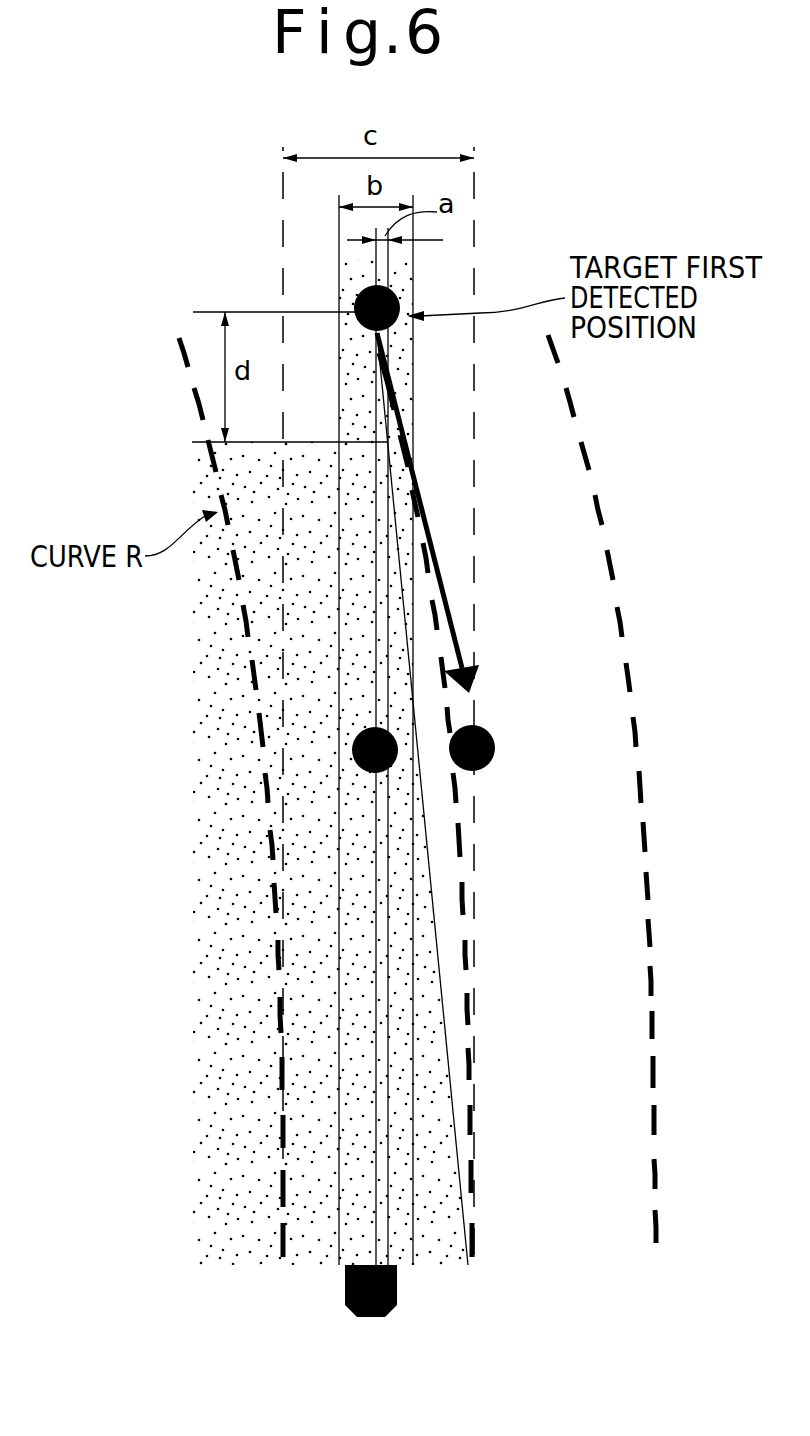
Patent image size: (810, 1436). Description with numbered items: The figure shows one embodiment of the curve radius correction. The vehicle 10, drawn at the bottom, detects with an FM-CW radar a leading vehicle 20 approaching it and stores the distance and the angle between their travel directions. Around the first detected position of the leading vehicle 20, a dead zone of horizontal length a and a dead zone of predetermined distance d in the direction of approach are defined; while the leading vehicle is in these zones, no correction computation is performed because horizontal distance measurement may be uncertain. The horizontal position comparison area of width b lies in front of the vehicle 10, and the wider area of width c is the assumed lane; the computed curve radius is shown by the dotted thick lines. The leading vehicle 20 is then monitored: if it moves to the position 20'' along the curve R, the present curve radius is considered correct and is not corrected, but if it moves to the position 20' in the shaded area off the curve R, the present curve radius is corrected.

The leading vehicle 20 is at (451, 276).
The position 20' of the leading vehicle 20' is at (446, 714).
The position 20'' of the leading vehicle 20'' is at (521, 737).
The vehicle 10 is at (397, 1297).